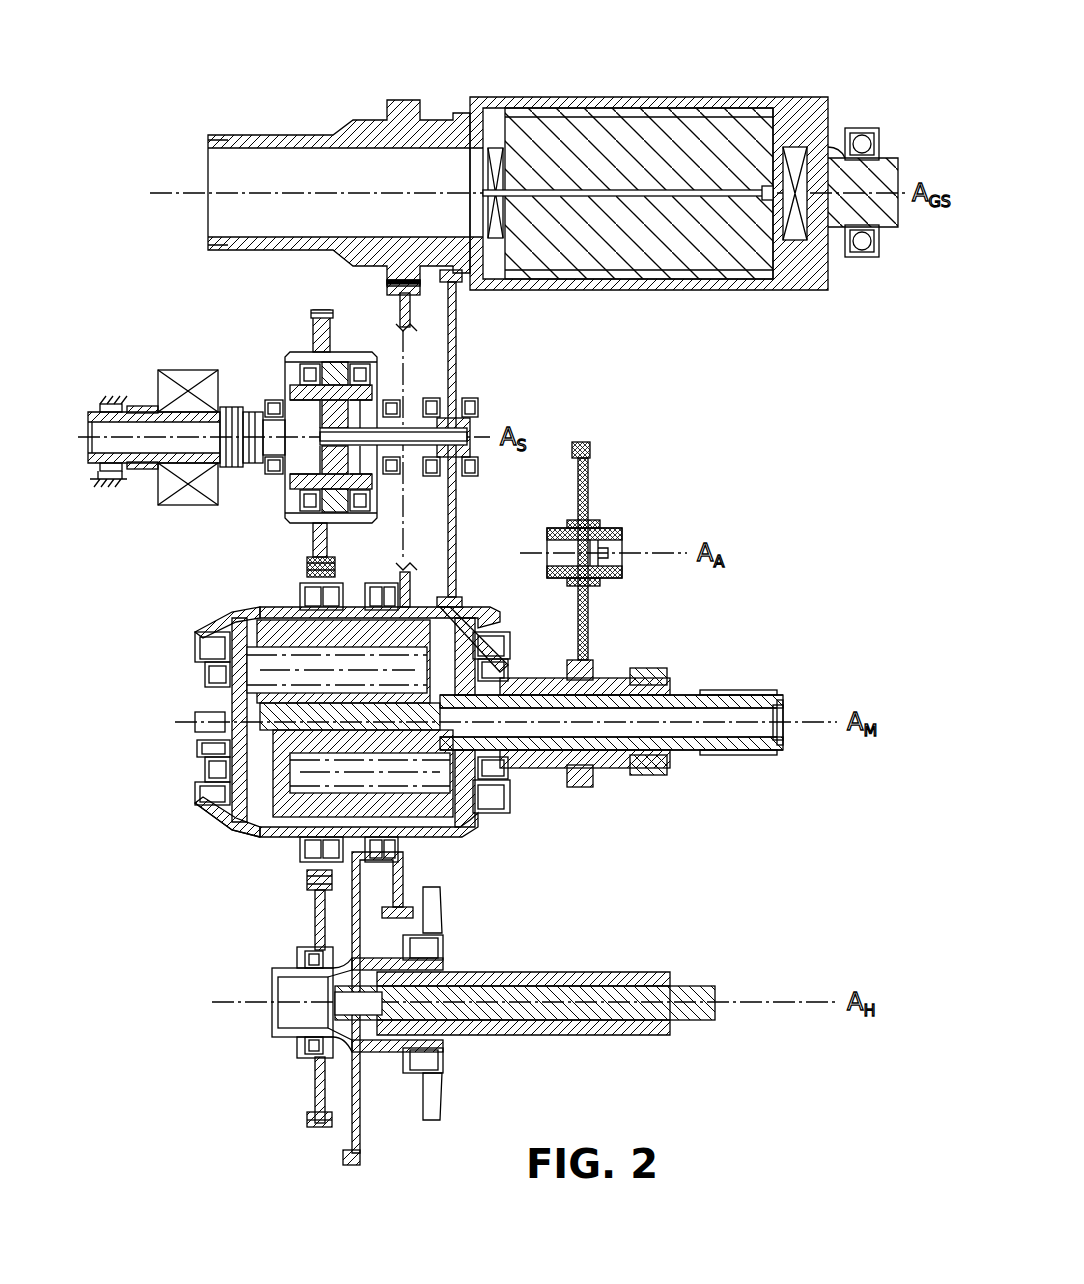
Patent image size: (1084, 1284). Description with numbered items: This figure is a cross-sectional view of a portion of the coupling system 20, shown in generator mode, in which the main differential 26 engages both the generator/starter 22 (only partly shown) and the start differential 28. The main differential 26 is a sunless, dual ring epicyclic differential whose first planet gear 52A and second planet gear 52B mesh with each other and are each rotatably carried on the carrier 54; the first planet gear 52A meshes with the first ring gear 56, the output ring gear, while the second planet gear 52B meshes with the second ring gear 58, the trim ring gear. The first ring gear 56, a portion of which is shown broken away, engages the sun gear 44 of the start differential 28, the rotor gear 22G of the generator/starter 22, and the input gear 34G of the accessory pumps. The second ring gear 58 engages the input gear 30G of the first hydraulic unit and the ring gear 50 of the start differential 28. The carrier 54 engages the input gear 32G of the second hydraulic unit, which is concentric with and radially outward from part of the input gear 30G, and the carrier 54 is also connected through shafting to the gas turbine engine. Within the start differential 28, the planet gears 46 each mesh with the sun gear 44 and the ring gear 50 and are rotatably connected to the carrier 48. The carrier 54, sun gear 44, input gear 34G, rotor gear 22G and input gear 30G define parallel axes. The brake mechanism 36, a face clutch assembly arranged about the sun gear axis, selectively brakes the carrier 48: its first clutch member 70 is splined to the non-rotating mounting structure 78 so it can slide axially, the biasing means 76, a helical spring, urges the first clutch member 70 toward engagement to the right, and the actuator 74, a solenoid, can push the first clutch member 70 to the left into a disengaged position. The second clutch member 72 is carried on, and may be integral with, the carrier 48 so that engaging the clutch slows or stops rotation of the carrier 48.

The coupling system 20 is at (793, 403).
The generator/starter 22 is at (657, 137).
The rotor gear 22G is at (387, 282).
The main differential 26 is at (188, 670).
The start differential 28 is at (295, 318).
The input gear of the first hydraulic unit 30G is at (315, 908).
The input gear of the second hydraulic unit 32G is at (360, 883).
The input gear of the accessory pumps 34G is at (588, 484).
The brake mechanism 36 is at (177, 523).
The sun gear 44 is at (456, 505).
The planet gears 46 is at (303, 378).
The carrier 48 is at (283, 480).
The ring gear 50 is at (313, 540).
The first planet gear 52A is at (268, 620).
The second planet gear 52B is at (428, 813).
The carrier 54 is at (200, 753).
The first ring gear 56 is at (400, 315).
The second ring gear 58 is at (257, 838).
The first clutch member 70 is at (231, 407).
The second clutch member 72 is at (253, 412).
The actuator 74 is at (187, 376).
The biasing means 76 is at (135, 406).
The mounting structure 78 is at (98, 404).